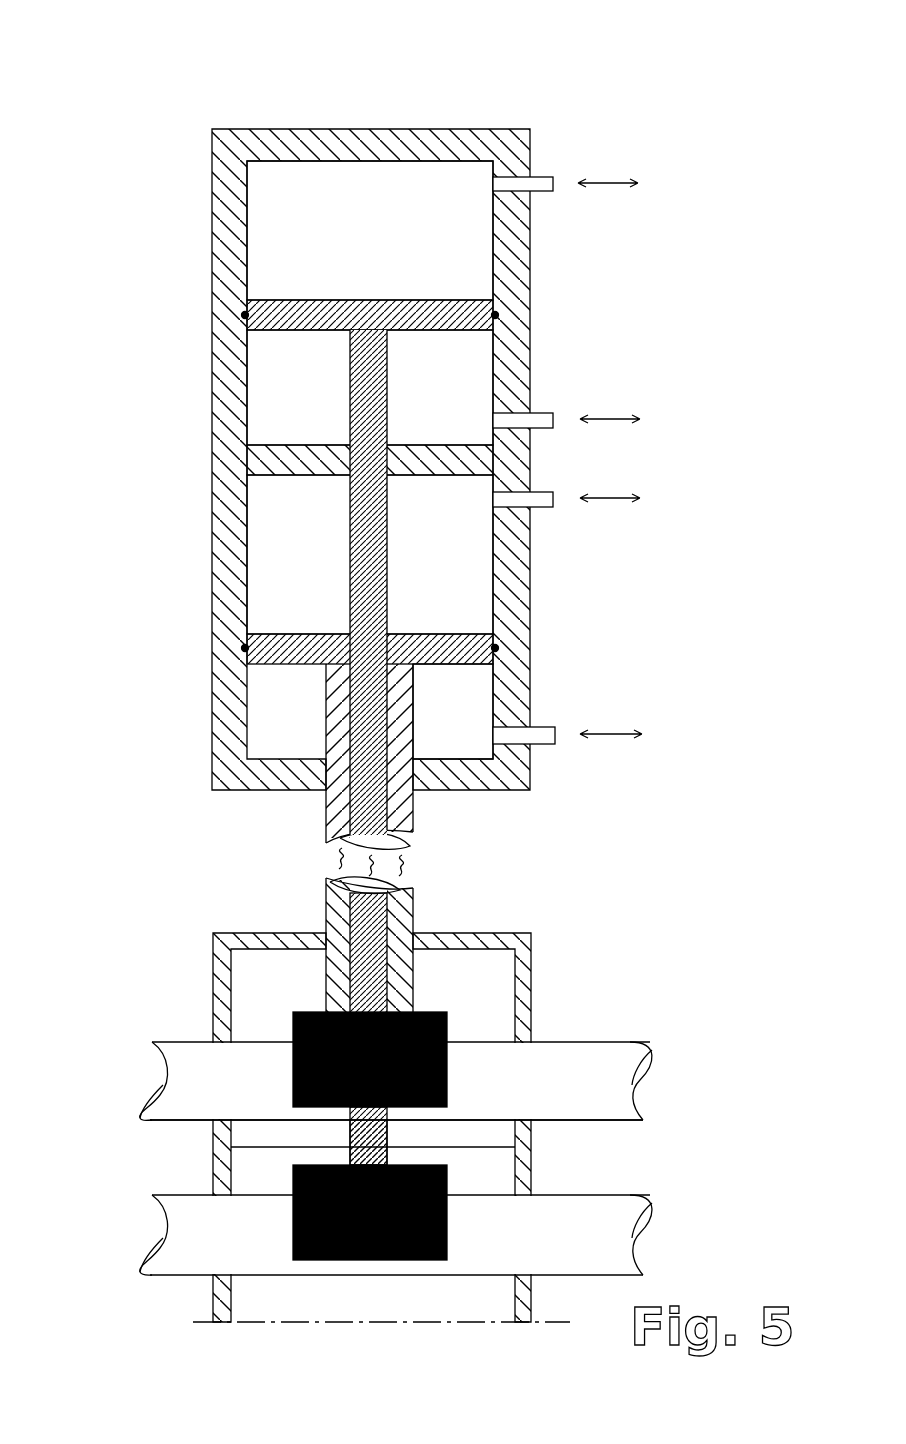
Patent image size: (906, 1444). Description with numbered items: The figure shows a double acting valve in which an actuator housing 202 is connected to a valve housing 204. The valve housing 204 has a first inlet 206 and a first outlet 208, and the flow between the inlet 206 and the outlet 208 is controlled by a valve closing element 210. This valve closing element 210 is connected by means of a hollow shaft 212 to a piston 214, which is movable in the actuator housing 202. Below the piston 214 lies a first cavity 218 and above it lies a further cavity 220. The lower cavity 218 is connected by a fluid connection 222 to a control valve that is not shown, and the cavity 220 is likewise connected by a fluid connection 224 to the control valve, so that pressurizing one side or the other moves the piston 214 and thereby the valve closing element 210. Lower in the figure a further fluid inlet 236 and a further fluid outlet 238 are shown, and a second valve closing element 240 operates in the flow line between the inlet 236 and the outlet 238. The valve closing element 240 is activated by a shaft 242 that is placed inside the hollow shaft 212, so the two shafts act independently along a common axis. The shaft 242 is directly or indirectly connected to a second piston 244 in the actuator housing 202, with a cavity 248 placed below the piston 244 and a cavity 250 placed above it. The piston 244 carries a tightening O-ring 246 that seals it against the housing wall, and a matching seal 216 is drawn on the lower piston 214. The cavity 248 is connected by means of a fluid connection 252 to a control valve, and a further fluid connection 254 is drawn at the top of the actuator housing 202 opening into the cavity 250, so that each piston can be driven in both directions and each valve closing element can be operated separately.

The actuator housing 202 is at (582, 82).
The valve housing 204 is at (620, 923).
The first inlet 206 is at (165, 1042).
The first outlet 208 is at (623, 1040).
The valve closing element 210 is at (430, 1012).
The hollow shaft 212 is at (407, 823).
The piston 214 is at (465, 638).
The piston seal 216 is at (495, 648).
The first cavity 218 is at (487, 808).
The cavity 220 is at (370, 554).
The fluid connection 222 is at (553, 727).
The fluid connection 224 is at (553, 492).
The further fluid inlet 236 is at (165, 1195).
The further fluid outlet 238 is at (623, 1195).
The valve closing element 240 is at (420, 1260).
The shaft 242 is at (385, 410).
The piston 244 is at (475, 303).
The tightening O-ring 246 is at (495, 315).
The cavity 248 is at (370, 387).
The cavity 250 is at (370, 230).
The fluid connection 252 is at (553, 412).
The upper fluid port 254 is at (550, 176).